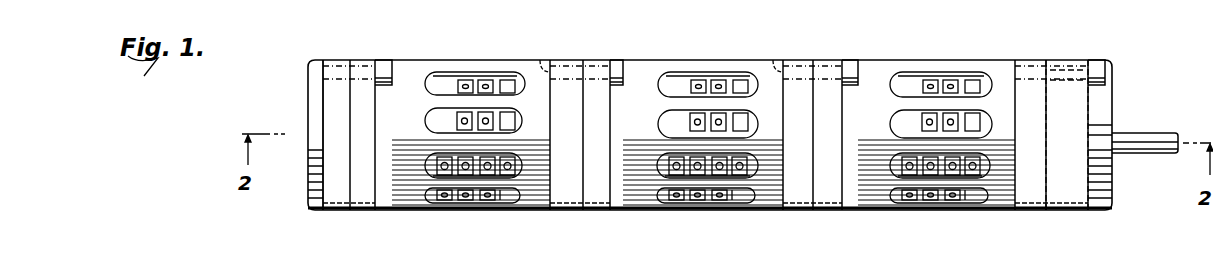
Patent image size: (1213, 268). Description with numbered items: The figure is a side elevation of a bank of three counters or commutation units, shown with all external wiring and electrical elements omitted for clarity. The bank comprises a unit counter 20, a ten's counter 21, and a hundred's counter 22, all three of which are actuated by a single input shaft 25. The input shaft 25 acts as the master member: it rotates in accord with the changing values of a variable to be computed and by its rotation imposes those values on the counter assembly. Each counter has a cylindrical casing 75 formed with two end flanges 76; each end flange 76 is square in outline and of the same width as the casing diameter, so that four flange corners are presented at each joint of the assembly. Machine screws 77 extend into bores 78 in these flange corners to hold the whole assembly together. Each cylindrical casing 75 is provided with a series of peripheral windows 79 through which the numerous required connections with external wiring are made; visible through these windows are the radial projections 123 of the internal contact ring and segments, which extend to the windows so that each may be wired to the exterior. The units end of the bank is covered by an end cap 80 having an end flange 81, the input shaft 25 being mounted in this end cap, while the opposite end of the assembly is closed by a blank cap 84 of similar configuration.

The unit counter 20 is at (988, 64).
The 10's counter 21 is at (718, 64).
The 100's counter 22 is at (488, 64).
The input shaft 25 is at (1140, 134).
The cylindrical casing 75 is at (436, 62).
The end flange 76 is at (366, 63).
The machine screw 77 is at (385, 64).
The bore 78 is at (545, 66).
The peripheral window 79 is at (435, 113).
The end cap 80 is at (1070, 64).
The end flange 81 is at (1060, 211).
The blank cap 84 is at (326, 211).
The radial projection 123 is at (506, 120).